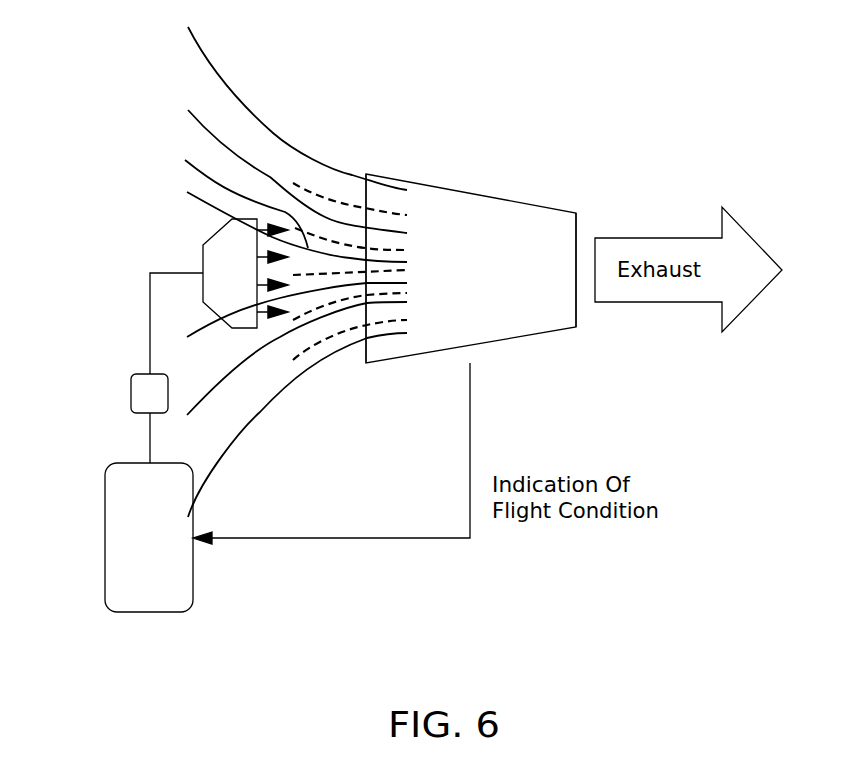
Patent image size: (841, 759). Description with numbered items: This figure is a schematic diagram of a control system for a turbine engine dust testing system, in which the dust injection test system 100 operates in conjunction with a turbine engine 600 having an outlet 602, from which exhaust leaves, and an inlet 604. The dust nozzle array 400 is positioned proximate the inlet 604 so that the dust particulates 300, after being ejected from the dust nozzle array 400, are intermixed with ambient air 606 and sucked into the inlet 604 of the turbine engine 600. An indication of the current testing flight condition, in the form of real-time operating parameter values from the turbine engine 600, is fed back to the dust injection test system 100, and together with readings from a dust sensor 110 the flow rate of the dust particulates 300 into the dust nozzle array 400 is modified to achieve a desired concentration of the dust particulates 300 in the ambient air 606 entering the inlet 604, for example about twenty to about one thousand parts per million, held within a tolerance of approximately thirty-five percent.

The dust injection test system 100 is at (105, 538).
The dust sensor 110 is at (131, 394).
The dust particulates 300 is at (297, 184).
The dust nozzle array 400 is at (214, 235).
The turbine engine 600 is at (473, 193).
The outlet 602 is at (577, 224).
The inlet 604 is at (325, 218).
The ambient air 606 is at (210, 63).